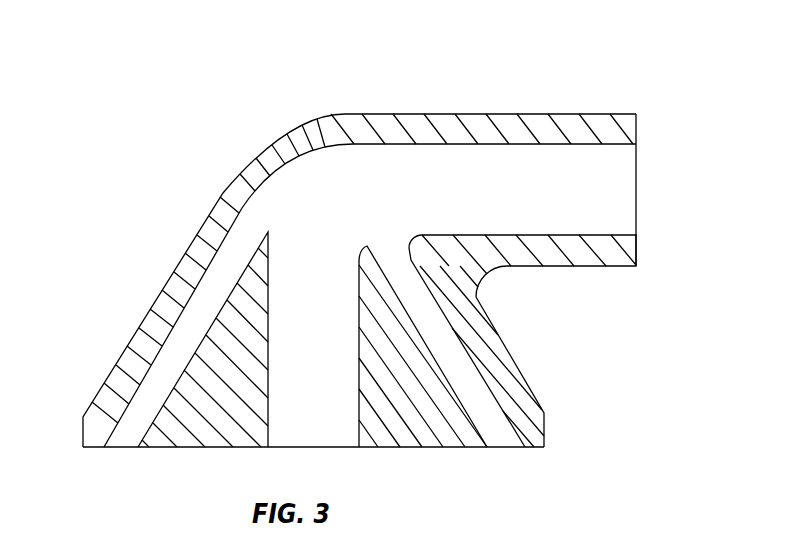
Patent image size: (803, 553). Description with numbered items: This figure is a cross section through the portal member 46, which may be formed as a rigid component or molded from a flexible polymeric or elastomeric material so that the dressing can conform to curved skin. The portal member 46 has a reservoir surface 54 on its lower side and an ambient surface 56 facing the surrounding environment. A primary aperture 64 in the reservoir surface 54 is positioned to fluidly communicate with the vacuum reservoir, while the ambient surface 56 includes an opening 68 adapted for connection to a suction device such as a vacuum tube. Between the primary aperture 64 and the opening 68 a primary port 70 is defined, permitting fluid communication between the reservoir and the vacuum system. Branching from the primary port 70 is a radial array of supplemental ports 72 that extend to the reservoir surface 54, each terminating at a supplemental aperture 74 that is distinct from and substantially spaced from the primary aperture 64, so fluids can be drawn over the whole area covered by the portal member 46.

The portal member 46 is at (155, 86).
The reservoir surface 54 is at (434, 452).
The ambient surface 56 is at (641, 257).
The primary aperture 64 is at (312, 452).
The opening 68 is at (656, 190).
The primary port 70 is at (455, 200).
The supplemental ports 72 is at (168, 358).
The supplemental aperture 74 is at (118, 450).